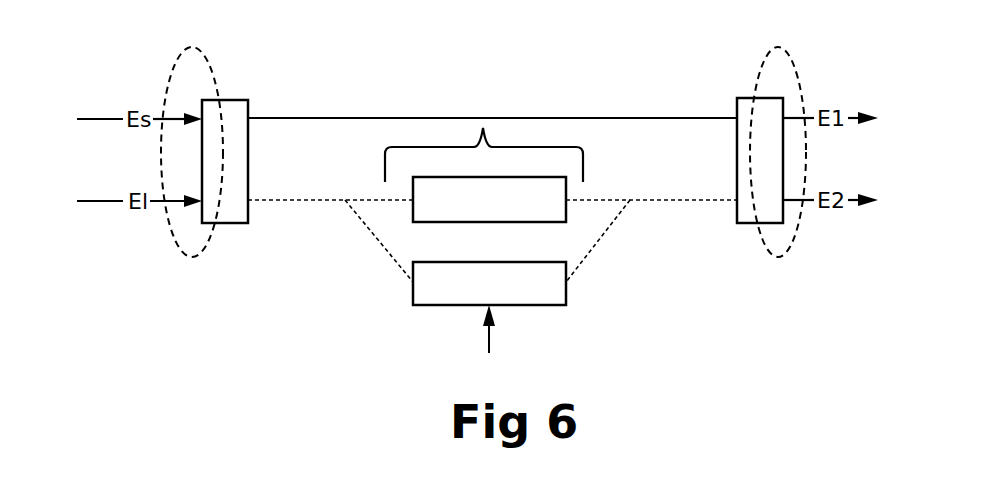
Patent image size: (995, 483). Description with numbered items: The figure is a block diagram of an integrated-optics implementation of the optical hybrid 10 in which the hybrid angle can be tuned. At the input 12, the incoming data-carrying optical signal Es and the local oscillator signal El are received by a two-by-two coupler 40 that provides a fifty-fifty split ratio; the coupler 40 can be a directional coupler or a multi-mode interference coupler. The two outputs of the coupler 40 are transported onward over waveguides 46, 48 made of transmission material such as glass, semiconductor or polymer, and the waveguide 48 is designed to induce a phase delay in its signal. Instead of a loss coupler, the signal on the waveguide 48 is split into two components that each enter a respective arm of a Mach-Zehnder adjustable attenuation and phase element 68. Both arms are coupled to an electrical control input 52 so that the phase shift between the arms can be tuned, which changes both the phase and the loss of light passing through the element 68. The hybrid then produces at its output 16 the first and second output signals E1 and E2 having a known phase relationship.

The optical hybrid 10 is at (582, 80).
The input 12 is at (193, 47).
The output 16 is at (778, 47).
The 2×2 coupler 40 is at (223, 98).
The waveguide 46 is at (303, 117).
The waveguide 48 is at (297, 199).
The electrical control input 52 is at (489, 335).
The Mach-Zehnder adjustable attenuation and phase element 68 is at (484, 199).